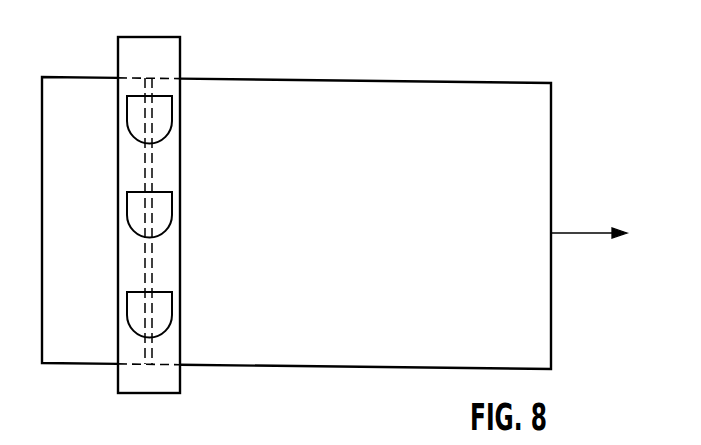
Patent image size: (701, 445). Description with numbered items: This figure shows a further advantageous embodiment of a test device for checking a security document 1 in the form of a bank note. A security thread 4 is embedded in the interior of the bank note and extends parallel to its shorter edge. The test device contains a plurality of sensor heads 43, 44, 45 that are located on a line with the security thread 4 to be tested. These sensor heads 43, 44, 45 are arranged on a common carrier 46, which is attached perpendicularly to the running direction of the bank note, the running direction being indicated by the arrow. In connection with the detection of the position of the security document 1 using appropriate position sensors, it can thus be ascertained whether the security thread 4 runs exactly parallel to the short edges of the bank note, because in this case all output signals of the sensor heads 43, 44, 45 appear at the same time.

The security document 1 is at (395, 368).
The security thread 4 is at (111, 239).
The sensor head 43 is at (180, 115).
The sensor head 44 is at (180, 213).
The sensor head 45 is at (180, 312).
The common carrier 46 is at (170, 384).